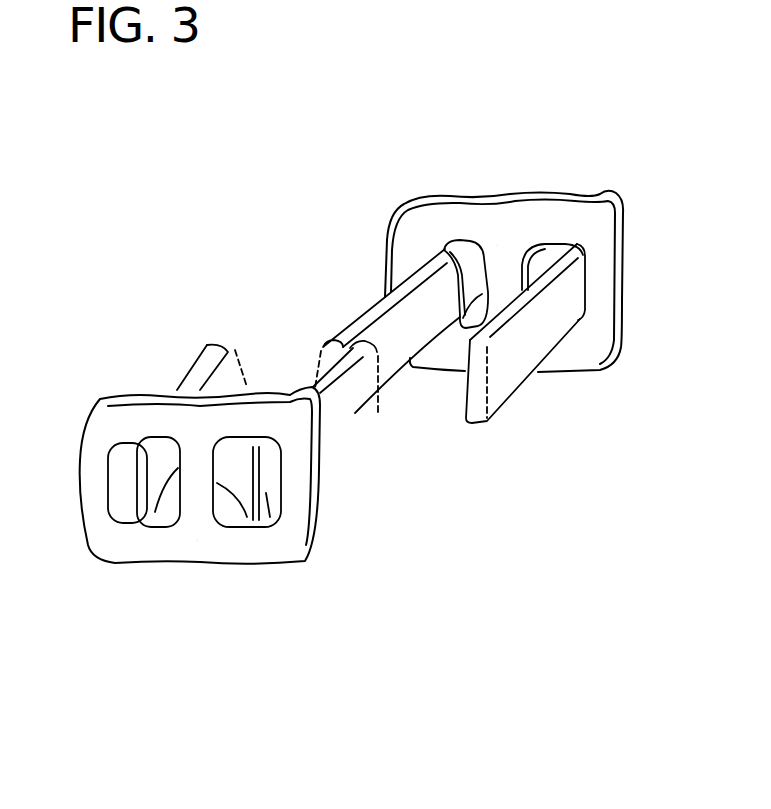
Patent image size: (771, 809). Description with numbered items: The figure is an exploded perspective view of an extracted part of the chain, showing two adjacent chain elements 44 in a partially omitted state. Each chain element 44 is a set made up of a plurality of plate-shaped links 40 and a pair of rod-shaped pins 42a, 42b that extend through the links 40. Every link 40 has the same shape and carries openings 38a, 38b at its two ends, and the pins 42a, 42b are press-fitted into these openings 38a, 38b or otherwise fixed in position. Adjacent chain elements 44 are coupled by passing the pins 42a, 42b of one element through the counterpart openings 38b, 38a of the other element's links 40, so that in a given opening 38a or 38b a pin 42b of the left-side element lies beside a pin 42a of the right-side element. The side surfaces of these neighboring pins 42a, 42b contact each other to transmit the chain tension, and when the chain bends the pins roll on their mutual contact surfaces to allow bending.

The chain element 44 is at (690, 93).
The pin 42a is at (77, 680).
The pin 42b is at (340, 680).
The link 40 is at (200, 680).
The opening 38a is at (459, 331).
The opening 38b is at (244, 518).